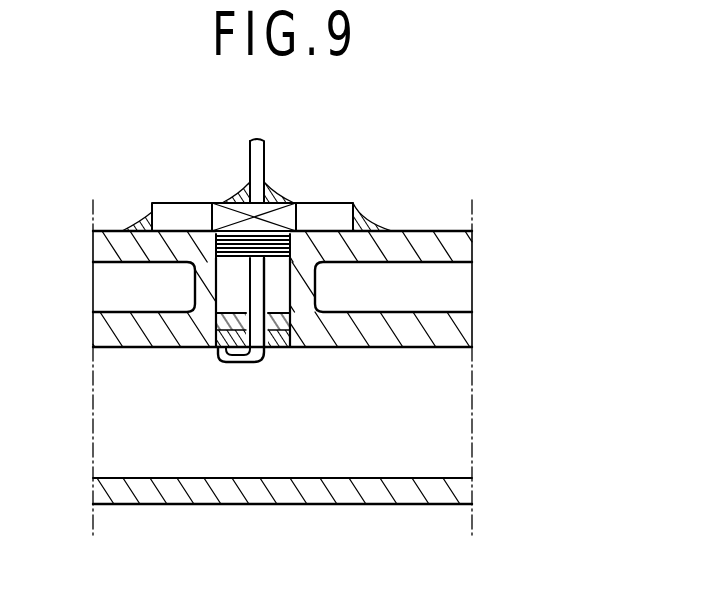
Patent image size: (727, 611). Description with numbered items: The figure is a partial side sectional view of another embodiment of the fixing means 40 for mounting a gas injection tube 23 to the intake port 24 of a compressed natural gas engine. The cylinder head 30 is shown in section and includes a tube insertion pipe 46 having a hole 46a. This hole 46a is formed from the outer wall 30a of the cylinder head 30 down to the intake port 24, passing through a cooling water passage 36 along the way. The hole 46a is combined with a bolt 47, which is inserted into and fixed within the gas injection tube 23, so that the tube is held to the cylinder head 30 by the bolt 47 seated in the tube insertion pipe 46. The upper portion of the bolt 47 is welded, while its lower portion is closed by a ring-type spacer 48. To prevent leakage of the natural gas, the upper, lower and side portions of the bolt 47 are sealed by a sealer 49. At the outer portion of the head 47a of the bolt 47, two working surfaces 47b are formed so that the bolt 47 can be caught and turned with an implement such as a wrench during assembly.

The fixing means 40 is at (457, 108).
The gas injection tube 23 is at (268, 167).
The intake port 24 is at (372, 460).
The cylinder head 30 is at (322, 250).
The outer wall 30a is at (462, 252).
The cooling water passage 36 is at (458, 287).
The tube insertion pipe 46 is at (208, 282).
The hole 46a is at (292, 294).
The bolt 47 is at (323, 200).
The head 47a is at (176, 214).
The working surfaces 47b is at (207, 202).
The ring-type spacer 48 is at (292, 349).
The sealer 49 is at (128, 216).